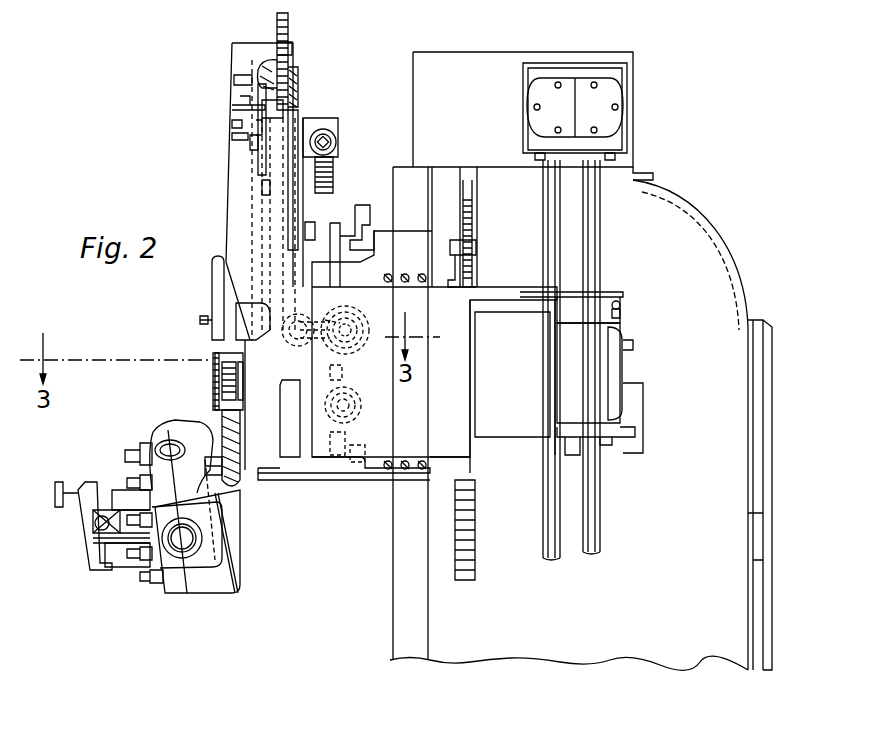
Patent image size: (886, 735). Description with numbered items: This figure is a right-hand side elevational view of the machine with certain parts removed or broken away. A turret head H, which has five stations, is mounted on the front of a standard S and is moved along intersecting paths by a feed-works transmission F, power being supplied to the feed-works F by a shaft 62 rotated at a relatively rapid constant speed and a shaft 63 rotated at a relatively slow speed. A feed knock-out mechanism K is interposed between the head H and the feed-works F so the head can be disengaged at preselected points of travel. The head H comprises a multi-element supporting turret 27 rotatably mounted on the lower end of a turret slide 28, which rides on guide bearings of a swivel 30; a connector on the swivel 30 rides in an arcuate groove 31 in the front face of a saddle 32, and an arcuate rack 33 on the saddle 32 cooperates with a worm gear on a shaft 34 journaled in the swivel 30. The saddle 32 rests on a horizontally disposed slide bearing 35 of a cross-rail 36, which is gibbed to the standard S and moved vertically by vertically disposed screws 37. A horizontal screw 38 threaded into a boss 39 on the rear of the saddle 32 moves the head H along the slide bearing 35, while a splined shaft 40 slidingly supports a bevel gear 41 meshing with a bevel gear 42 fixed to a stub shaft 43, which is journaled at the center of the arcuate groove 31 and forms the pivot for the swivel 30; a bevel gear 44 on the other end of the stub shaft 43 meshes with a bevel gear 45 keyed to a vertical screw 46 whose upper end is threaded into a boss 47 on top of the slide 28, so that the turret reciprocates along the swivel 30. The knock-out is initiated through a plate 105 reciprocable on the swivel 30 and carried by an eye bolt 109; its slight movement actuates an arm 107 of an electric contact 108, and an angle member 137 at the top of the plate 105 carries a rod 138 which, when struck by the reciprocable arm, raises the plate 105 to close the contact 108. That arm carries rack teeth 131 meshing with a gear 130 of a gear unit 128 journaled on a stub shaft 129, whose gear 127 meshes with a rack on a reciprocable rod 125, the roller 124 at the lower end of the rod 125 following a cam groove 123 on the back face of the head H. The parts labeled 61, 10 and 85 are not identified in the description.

The machine frame column 61 is at (483, 68).
The machine base 10 is at (745, 660).
The standard S is at (735, 557).
The feed-works transmission F is at (474, 481).
The feed knock-out mechanism K is at (650, 409).
The shaft 62 is at (601, 212).
The shaft 63 is at (544, 211).
The cross-rail 36 is at (405, 240).
The vertically disposed screws 37 is at (462, 272).
The splined shaft 40 is at (356, 321).
The bevel gear 41 is at (362, 344).
The stub shaft 43 is at (346, 312).
The bevel gear 45 is at (338, 316).
The bevel gear 42 is at (350, 366).
The horizontally disposed screw 38 is at (358, 402).
The boss 39 is at (355, 420).
The bevel gear 44 is at (296, 352).
The slide bearing 35 is at (340, 238).
The saddle 32 is at (358, 206).
The arcuate groove 31 is at (318, 224).
The turret slide 28 is at (237, 215).
The boss 47 is at (292, 96).
The vertically-disposed screw 46 is at (268, 62).
The eye bolt 109 is at (236, 82).
The plate 105 is at (258, 107).
The angle member 137 is at (238, 124).
The rod 138 is at (240, 136).
The arm 107 is at (252, 144).
The electric contact 108 is at (262, 150).
The shaft 34 is at (338, 141).
The arcuate rack 33 is at (334, 174).
The guide plate 85 is at (210, 322).
The rack teeth 131 is at (226, 360).
The gear 127 is at (223, 383).
The gear unit 128 is at (238, 385).
The gear 130 is at (224, 408).
The stub shaft 129 is at (238, 385).
The swivel 30 is at (290, 482).
The multi-element supporting turret 27 is at (167, 432).
The turret head H is at (213, 583).
The cam groove 123 is at (205, 545).
The roller 124 is at (222, 495).
The reciprocable rod 125 is at (232, 480).